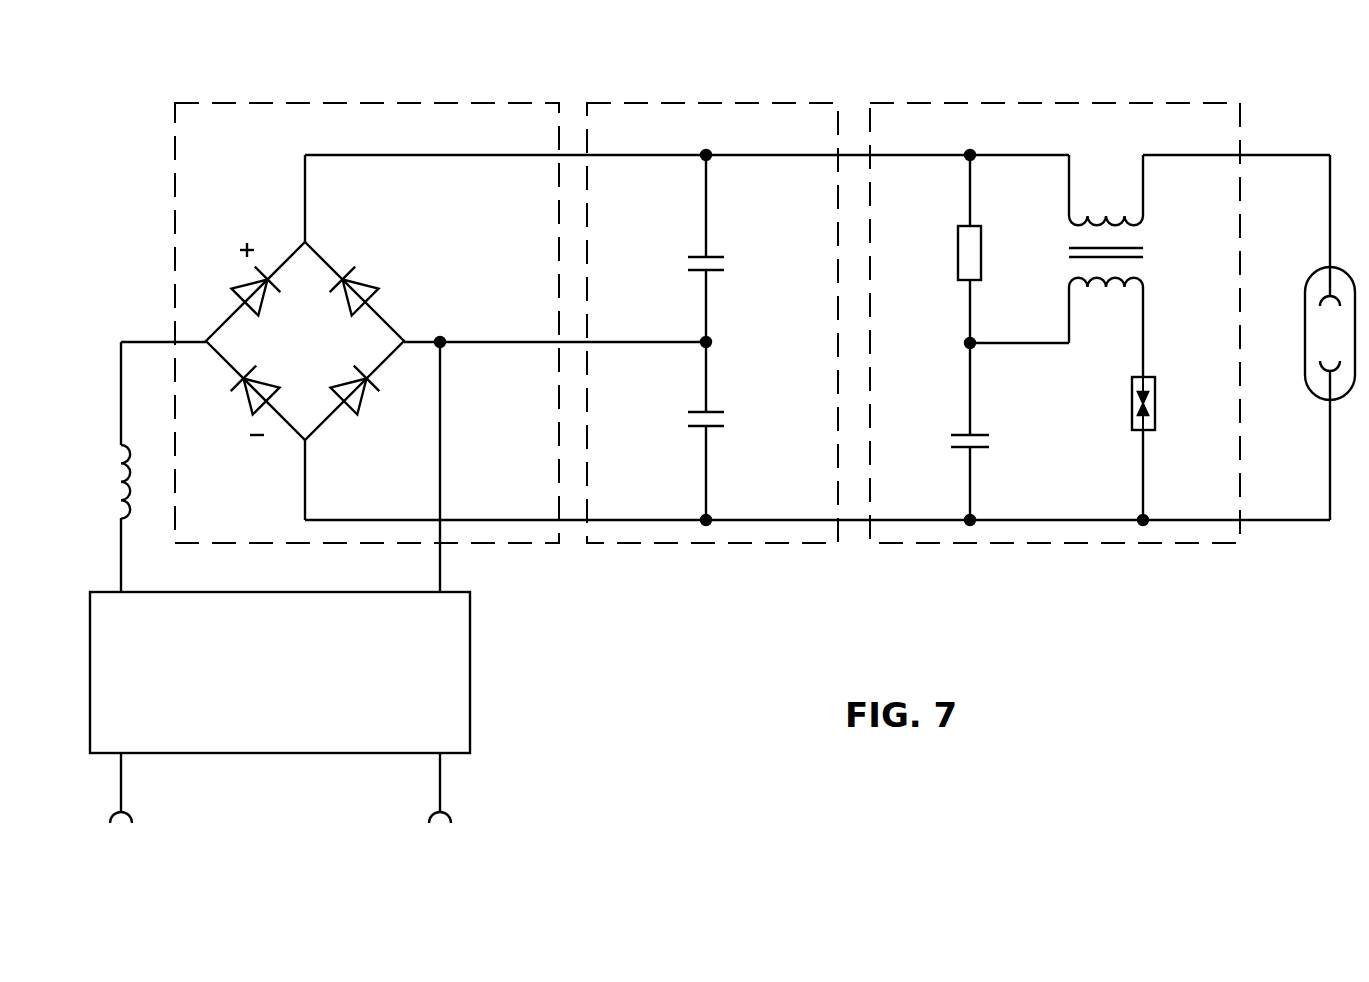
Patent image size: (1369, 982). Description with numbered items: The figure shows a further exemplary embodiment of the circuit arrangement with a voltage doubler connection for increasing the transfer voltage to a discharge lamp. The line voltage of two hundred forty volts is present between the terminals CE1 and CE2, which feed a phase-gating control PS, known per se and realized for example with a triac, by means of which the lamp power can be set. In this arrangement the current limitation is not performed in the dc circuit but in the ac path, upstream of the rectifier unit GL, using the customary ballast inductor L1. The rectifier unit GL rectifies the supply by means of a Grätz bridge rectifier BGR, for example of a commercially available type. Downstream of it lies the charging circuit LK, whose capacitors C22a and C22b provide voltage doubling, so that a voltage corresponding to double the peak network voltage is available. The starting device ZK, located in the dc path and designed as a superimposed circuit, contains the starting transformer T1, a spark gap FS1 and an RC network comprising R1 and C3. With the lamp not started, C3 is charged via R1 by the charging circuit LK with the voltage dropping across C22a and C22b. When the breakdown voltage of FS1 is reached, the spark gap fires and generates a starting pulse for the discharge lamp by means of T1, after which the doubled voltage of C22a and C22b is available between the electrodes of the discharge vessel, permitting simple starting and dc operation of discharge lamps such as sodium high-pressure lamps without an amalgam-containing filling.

The rectifier unit GL is at (355, 103).
The charging circuit LK is at (712, 103).
The starting device ZK is at (1008, 103).
The Grätz bridge rectifier BGR is at (305, 319).
The ballast inductor L1 is at (102, 467).
The phase-gating control PS is at (280, 672).
The terminal CE1 is at (127, 809).
The terminal CE2 is at (441, 811).
The capacitor C22a is at (733, 248).
The capacitor C22b is at (734, 431).
The resistor R1 is at (992, 249).
The starting transformer T1 is at (1130, 266).
The capacitor C3 is at (991, 431).
The spark gap FS1 is at (1173, 448).